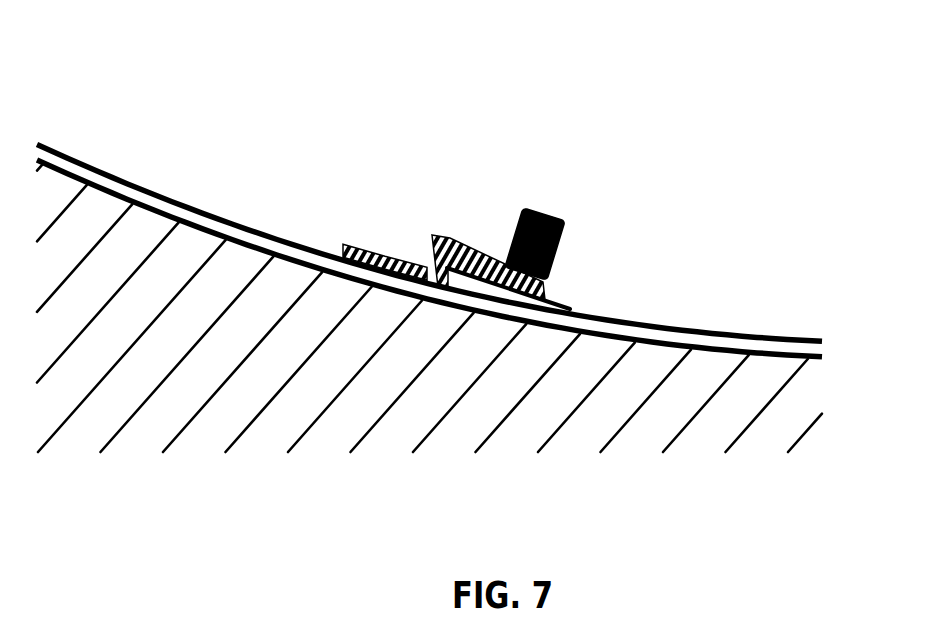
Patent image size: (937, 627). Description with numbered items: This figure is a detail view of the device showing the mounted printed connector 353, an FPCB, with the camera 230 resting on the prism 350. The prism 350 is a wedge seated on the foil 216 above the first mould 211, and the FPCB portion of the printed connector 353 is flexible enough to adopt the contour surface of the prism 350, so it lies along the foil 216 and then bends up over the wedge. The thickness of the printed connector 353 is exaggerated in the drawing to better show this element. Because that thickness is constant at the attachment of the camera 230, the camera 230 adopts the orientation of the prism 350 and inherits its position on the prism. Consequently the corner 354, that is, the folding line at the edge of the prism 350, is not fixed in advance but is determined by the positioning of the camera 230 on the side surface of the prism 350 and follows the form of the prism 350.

The first mould 211 is at (207, 438).
The foil 216 is at (689, 328).
The camera 230 is at (540, 213).
The prism 350 is at (467, 282).
The printed connector 353 is at (368, 248).
The corner 354 is at (441, 235).